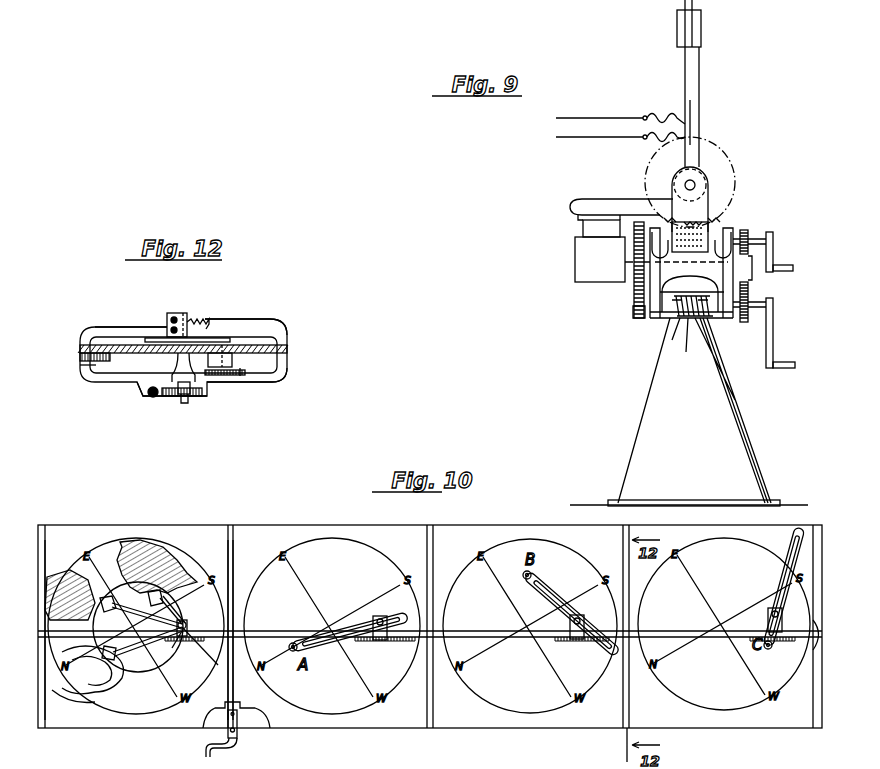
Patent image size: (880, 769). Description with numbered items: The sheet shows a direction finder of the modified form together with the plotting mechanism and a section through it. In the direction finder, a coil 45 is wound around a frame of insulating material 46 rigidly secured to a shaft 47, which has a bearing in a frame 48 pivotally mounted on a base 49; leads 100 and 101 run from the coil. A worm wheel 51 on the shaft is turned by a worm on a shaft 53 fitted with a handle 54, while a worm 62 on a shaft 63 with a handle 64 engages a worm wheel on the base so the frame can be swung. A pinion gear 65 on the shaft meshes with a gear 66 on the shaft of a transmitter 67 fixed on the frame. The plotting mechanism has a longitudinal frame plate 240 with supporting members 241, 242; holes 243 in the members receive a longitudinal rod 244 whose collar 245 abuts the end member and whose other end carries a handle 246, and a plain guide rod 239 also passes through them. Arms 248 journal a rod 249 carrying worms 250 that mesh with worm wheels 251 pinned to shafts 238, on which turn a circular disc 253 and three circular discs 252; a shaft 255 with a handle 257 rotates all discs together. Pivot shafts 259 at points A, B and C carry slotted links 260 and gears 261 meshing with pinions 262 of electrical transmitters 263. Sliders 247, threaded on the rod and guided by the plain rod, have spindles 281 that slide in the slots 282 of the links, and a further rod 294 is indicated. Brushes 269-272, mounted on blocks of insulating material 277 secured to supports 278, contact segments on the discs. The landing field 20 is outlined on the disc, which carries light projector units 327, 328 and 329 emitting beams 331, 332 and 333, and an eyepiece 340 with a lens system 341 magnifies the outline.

In FIG. 9, the coil 45 is at (690, 38).
In FIG. 9, the frame of insulating material 46 is at (701, 30).
In FIG. 9, the shaft 47 is at (696, 185).
In FIG. 9, the frame 48 is at (708, 206).
In FIG. 9, the base 49 is at (648, 420).
In FIG. 9, the worm wheel 51 is at (735, 158).
In FIG. 9, the shaft 53 is at (752, 233).
In FIG. 9, the handle 54 is at (775, 253).
In FIG. 9, the worm 62 is at (690, 320).
In FIG. 9, the shaft 63 is at (752, 300).
In FIG. 9, the handle 64 is at (775, 331).
In FIG. 9, the pinion gear 65 is at (633, 316).
In FIG. 9, the gear 66 is at (633, 291).
In FIG. 9, the transmitter 67 is at (612, 251).
In FIG. 9, the lead wires 100 is at (666, 115).
In FIG. 9, the lead wires 101 is at (596, 127).
In FIG. 10, the landing field 20 is at (110, 629).
In FIG. 12, the shafts 238 is at (187, 401).
In FIG. 12, the plain guide rod 239 is at (145, 326).
In FIG. 12, the longitudinal frame plate 240 is at (289, 354).
In FIG. 10, the longitudinal frame plate 240 is at (280, 532).
In FIG. 12, the supporting members 241 is at (272, 322).
In FIG. 10, the supporting members 241 is at (233, 570).
In FIG. 12, the supporting members 242 is at (270, 380).
In FIG. 12, the holes 243 is at (168, 314).
In FIG. 10, the holes 243 is at (252, 611).
In FIG. 12, the longitudinal rod 244 is at (185, 312).
In FIG. 10, the collar 245 is at (815, 656).
In FIG. 10, the handle 246 is at (45, 580).
In FIG. 12, the sliders 247 is at (204, 321).
In FIG. 10, the sliders 247 is at (382, 641).
In FIG. 12, the arms 248 is at (146, 395).
In FIG. 12, the rod 249 is at (152, 398).
In FIG. 12, the worms 250 is at (169, 398).
In FIG. 12, the worm wheels 251 is at (207, 387).
In FIG. 10, the circular discs 252 is at (380, 553).
In FIG. 10, the circular disc 253 is at (190, 568).
In FIG. 10, the shaft 255 is at (238, 728).
In FIG. 10, the handle 257 is at (224, 752).
In FIG. 12, the pivot shafts 259 is at (232, 341).
In FIG. 10, the pivot shafts 259 is at (288, 647).
In FIG. 12, the slotted links 260 is at (205, 343).
In FIG. 10, the slotted links 260 is at (326, 641).
In FIG. 12, the gears 261 is at (241, 378).
In FIG. 12, the pinions 262 is at (218, 377).
In FIG. 12, the electrical transmitters 263 is at (232, 359).
In FIG. 12, the brushes 269-272 is at (96, 375).
In FIG. 12, the blocks of insulating material 277 is at (78, 371).
In FIG. 12, the supports 278 is at (80, 356).
In FIG. 10, the spindles 281 is at (381, 618).
In FIG. 10, the slots 282 is at (561, 598).
In FIG. 10, the rod 294 is at (256, 630).
In FIG. 10, the light projector unit 327 is at (106, 600).
In FIG. 10, the light projector unit 328 is at (165, 599).
In FIG. 10, the light projector unit 329 is at (110, 661).
In FIG. 10, the beam of light 331 is at (135, 605).
In FIG. 10, the beam of light 332 is at (126, 649).
In FIG. 10, the beam of light 333 is at (206, 655).
In FIG. 10, the eyepiece 340 is at (175, 642).
In FIG. 10, the lens system 341 is at (181, 637).